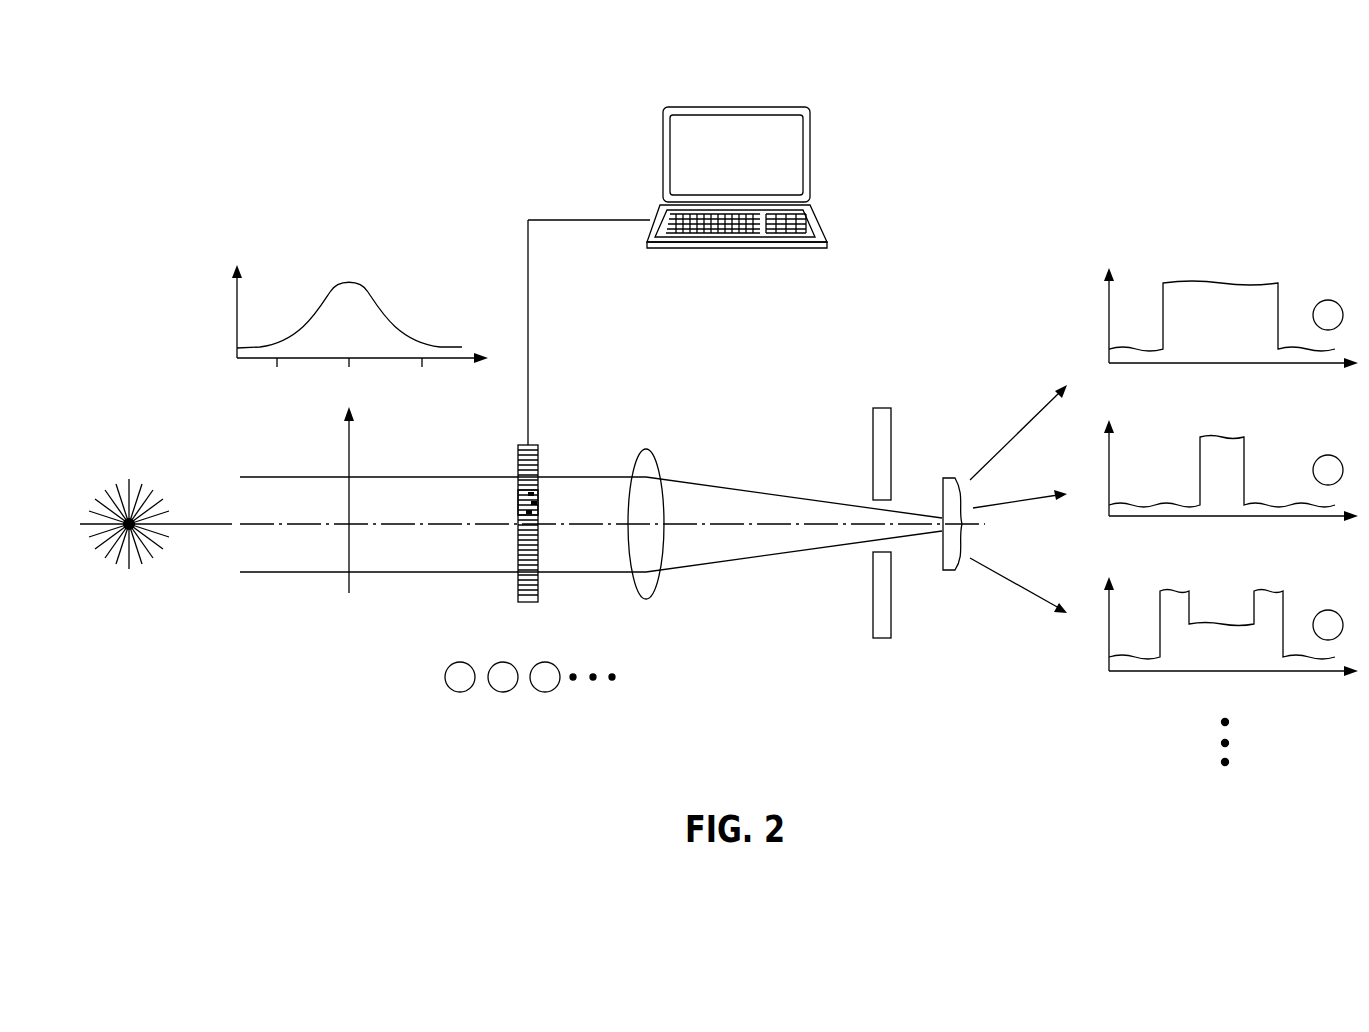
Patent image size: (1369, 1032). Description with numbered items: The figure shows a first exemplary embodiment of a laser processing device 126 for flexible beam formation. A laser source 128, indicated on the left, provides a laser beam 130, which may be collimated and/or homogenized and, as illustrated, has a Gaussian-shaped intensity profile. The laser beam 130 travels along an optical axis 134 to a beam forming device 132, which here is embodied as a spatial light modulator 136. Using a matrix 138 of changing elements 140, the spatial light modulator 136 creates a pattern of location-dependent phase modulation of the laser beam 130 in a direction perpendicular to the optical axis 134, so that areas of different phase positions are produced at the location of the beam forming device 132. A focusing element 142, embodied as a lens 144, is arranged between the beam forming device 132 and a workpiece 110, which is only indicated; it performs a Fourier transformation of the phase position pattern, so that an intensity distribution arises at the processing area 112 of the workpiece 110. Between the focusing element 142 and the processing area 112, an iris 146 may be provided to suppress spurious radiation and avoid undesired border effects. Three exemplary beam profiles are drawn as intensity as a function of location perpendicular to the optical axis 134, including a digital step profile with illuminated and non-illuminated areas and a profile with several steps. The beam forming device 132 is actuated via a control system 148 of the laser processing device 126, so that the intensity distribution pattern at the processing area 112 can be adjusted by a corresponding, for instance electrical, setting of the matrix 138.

The workpiece 110 is at (934, 553).
The processing area 112 is at (952, 524).
The laser processing device 126 is at (1192, 136).
The laser source 128 is at (160, 465).
The laser beam 130 is at (284, 582).
The beam forming device 132 is at (535, 445).
The optical axis 134 is at (418, 530).
The spatial light modulator 136 is at (547, 456).
The matrix 138 is at (504, 492).
The changing elements 140 is at (535, 494).
The focusing element 142 is at (648, 462).
The lens 144 is at (646, 524).
The iris 146 is at (885, 596).
The control system 148 is at (622, 169).